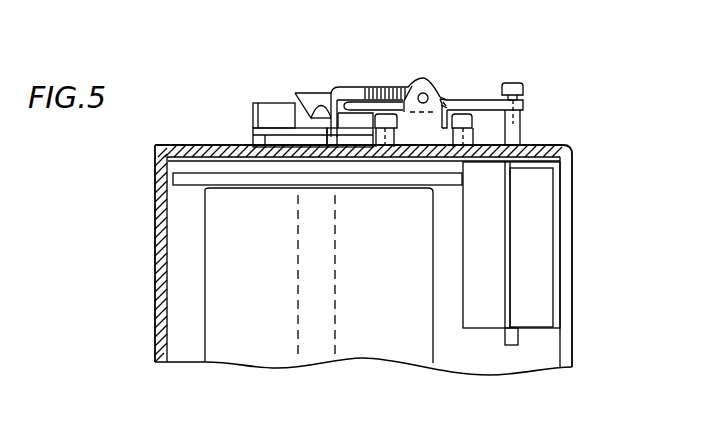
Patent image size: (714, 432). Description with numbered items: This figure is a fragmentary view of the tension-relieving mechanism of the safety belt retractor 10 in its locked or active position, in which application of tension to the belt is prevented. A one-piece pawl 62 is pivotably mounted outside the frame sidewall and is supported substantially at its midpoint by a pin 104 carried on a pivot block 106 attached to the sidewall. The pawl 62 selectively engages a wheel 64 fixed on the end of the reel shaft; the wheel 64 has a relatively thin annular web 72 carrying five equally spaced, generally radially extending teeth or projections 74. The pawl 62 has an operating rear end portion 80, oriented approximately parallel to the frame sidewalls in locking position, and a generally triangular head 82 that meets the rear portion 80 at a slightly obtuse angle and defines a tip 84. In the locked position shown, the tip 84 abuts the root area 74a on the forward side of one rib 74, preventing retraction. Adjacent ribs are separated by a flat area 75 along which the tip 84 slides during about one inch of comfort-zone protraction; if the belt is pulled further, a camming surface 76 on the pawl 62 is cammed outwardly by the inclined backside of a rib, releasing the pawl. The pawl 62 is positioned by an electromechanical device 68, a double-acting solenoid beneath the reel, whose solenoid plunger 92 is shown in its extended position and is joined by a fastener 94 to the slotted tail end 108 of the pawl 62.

The retractor 10 is at (585, 157).
The pawl 62 is at (405, 86).
The wheel 64 is at (248, 104).
The electromechanical device 68 is at (530, 229).
The annular web 72 is at (272, 130).
The teeth or projections 74 is at (313, 117).
The root area 74a is at (328, 135).
The flat area 75 is at (378, 130).
The camming surface 76 is at (345, 147).
The operating rear end portion 80 is at (468, 100).
The triangular head 82 is at (334, 99).
The tip 84 is at (330, 112).
The solenoid plunger 92 is at (522, 132).
The fastener 94 is at (513, 83).
The pin 104 is at (428, 90).
The pivot block 106 is at (440, 96).
The tail end 108 is at (521, 109).